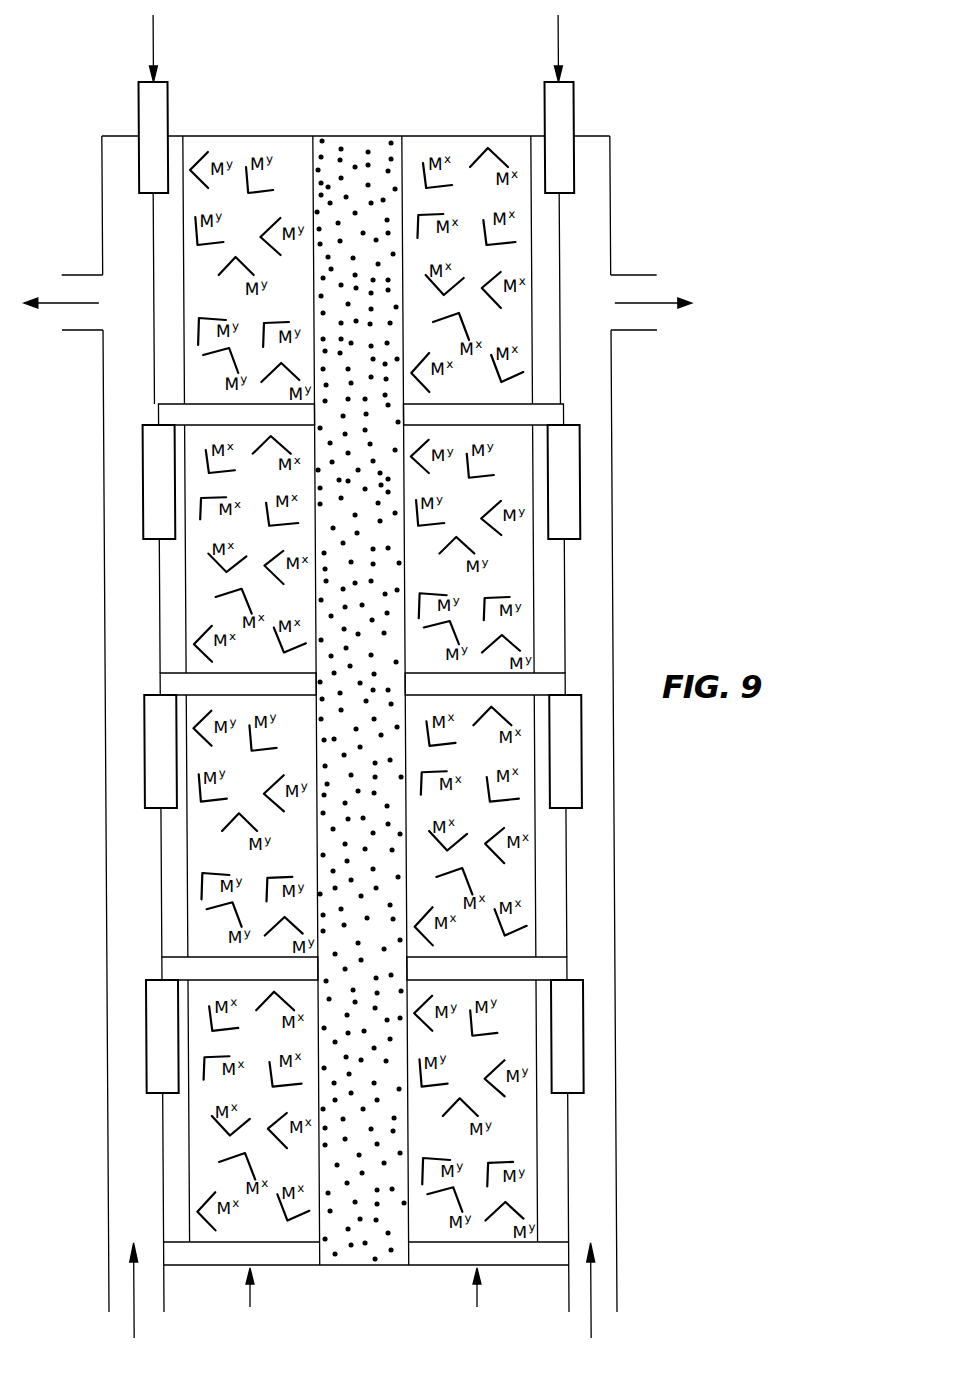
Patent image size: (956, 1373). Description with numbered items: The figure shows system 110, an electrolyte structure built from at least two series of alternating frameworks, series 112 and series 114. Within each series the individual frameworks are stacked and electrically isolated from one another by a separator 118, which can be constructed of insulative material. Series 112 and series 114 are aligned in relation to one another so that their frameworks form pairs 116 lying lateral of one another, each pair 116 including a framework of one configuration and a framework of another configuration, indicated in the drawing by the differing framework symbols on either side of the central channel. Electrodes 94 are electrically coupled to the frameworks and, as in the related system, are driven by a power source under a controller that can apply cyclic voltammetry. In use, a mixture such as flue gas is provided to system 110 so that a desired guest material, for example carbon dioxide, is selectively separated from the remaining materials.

The electrodes 94 is at (153, 100).
The system 110 is at (672, 122).
The series 112 is at (254, 1301).
The series 114 is at (481, 1301).
The pairs 116 is at (291, 160).
The separator 118 is at (170, 417).